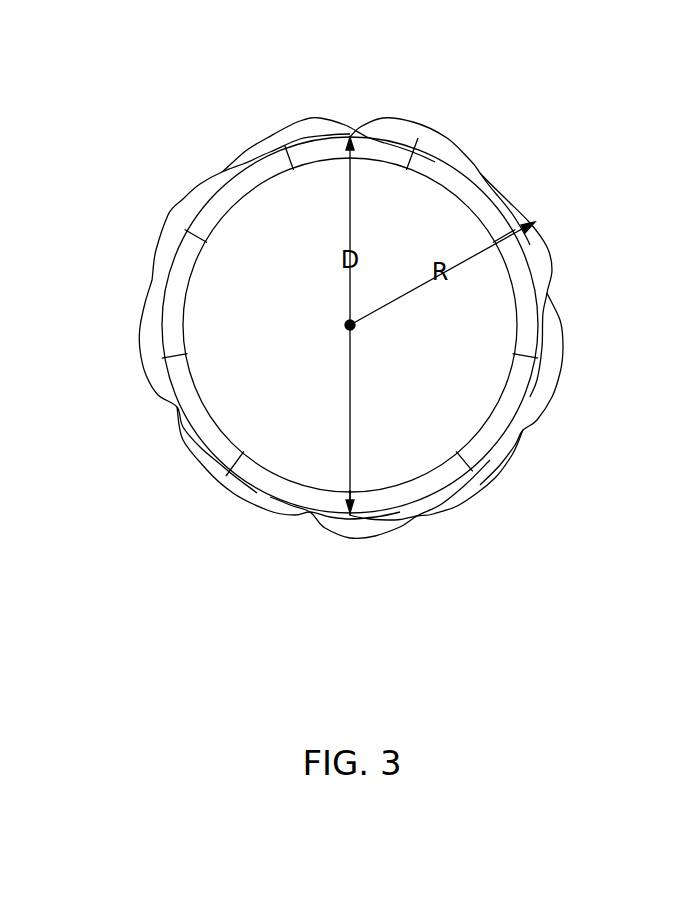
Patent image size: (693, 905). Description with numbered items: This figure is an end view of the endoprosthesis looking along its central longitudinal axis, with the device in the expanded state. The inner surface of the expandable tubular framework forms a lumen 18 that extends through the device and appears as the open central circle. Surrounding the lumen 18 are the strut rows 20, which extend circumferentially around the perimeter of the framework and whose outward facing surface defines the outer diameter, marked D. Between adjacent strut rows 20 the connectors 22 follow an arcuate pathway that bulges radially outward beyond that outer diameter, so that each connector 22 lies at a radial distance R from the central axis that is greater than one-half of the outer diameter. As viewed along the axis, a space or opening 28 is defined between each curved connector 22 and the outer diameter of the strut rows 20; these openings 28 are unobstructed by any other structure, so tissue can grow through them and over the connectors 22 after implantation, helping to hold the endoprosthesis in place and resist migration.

The lumen 18 is at (256, 392).
The strut rows 20 is at (310, 150).
The connectors 22 is at (452, 134).
The space or opening 28 is at (418, 138).